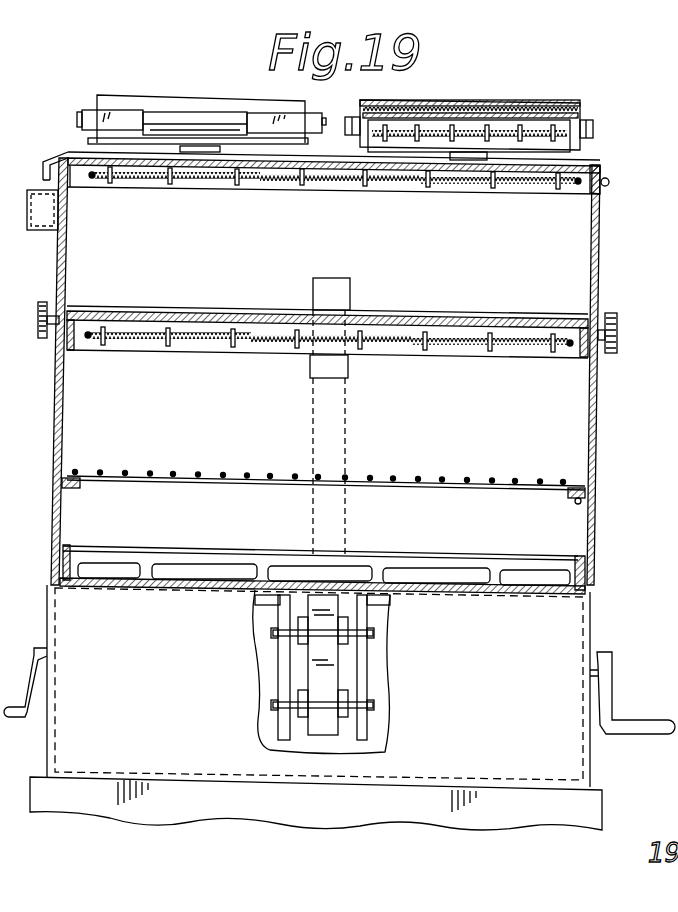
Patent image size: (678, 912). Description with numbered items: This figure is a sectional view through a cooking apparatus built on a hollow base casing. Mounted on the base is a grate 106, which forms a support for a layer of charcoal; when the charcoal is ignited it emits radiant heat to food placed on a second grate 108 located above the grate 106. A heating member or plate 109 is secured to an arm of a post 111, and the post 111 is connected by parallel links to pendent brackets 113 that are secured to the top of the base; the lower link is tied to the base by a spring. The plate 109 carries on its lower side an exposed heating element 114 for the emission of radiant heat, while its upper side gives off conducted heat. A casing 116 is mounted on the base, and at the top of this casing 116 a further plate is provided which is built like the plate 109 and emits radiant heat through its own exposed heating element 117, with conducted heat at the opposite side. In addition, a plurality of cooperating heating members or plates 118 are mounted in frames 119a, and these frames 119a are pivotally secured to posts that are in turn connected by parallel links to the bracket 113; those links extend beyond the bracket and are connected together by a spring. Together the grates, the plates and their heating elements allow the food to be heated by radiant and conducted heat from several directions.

The grate 106 is at (428, 567).
The second grate 108 is at (428, 482).
The heating member or plate 109 is at (397, 322).
The post 111 is at (323, 667).
The pendent brackets 113 is at (283, 663).
The heating element 114 is at (200, 340).
The casing 116 is at (600, 243).
The heating element 117 is at (266, 178).
The cooperating heating members or plates 118 is at (210, 102).
The frames 119a is at (80, 128).